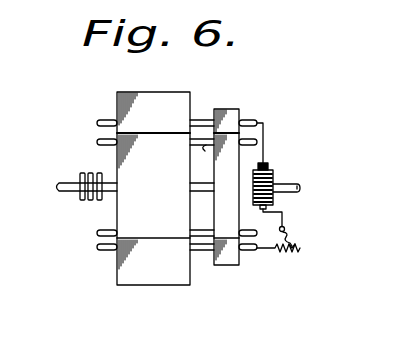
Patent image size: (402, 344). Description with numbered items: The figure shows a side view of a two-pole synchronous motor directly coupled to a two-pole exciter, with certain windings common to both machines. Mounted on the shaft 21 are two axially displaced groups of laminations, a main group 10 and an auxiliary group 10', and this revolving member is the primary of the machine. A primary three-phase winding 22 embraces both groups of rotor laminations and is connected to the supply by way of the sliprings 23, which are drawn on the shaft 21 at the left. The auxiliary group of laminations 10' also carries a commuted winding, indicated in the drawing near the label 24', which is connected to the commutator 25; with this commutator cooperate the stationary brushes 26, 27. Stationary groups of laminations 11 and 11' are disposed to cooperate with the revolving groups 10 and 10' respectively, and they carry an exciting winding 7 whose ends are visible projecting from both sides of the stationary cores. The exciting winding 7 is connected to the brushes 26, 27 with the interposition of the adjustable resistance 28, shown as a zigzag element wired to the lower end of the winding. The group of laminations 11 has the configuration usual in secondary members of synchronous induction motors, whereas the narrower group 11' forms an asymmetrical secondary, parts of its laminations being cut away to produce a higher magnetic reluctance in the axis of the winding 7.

The exciting winding 7 is at (100, 121).
The main group of laminations 10 is at (134, 188).
The auxiliary group of laminations 10' is at (216, 187).
The stationary group of laminations 11 is at (153, 184).
The asymmetrical secondary group of laminations 11' is at (227, 194).
The shaft 21 is at (57, 191).
The primary three-phase winding 22 is at (97, 248).
The sliprings 23 is at (90, 172).
The connecting lead 24' is at (203, 162).
The commutator 25 is at (273, 181).
The brush 26 is at (268, 164).
The brush 27 is at (277, 228).
The adjustable resistance 28 is at (281, 257).